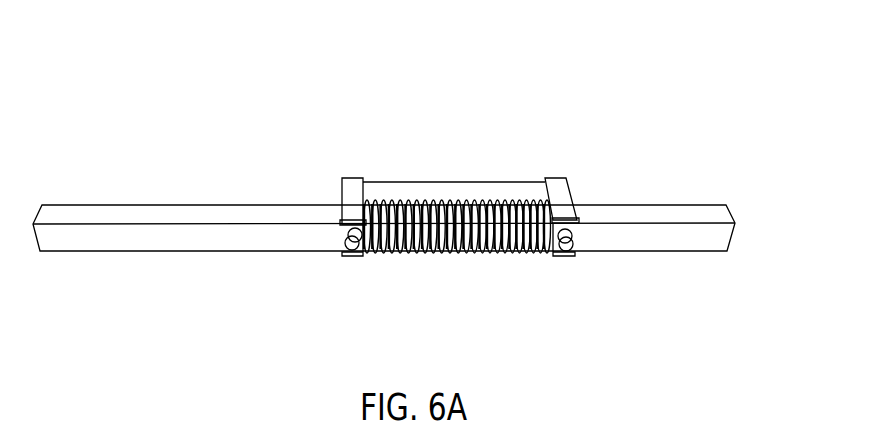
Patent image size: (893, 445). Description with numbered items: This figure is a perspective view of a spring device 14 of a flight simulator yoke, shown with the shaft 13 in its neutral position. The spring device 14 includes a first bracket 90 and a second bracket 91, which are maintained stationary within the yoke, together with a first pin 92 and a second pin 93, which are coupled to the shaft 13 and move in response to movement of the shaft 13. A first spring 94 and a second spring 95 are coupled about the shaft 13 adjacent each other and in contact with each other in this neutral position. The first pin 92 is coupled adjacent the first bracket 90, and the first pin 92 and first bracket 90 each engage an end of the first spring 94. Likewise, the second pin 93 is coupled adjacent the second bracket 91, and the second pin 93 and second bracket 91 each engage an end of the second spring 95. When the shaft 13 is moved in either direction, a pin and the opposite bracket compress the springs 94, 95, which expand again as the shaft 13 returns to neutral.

The shaft 13 is at (172, 243).
The spring device 14 is at (459, 180).
The first bracket 90 is at (347, 212).
The second bracket 91 is at (573, 208).
The first pin 92 is at (347, 237).
The second pin 93 is at (572, 234).
The first spring 94 is at (428, 252).
The second spring 95 is at (504, 251).